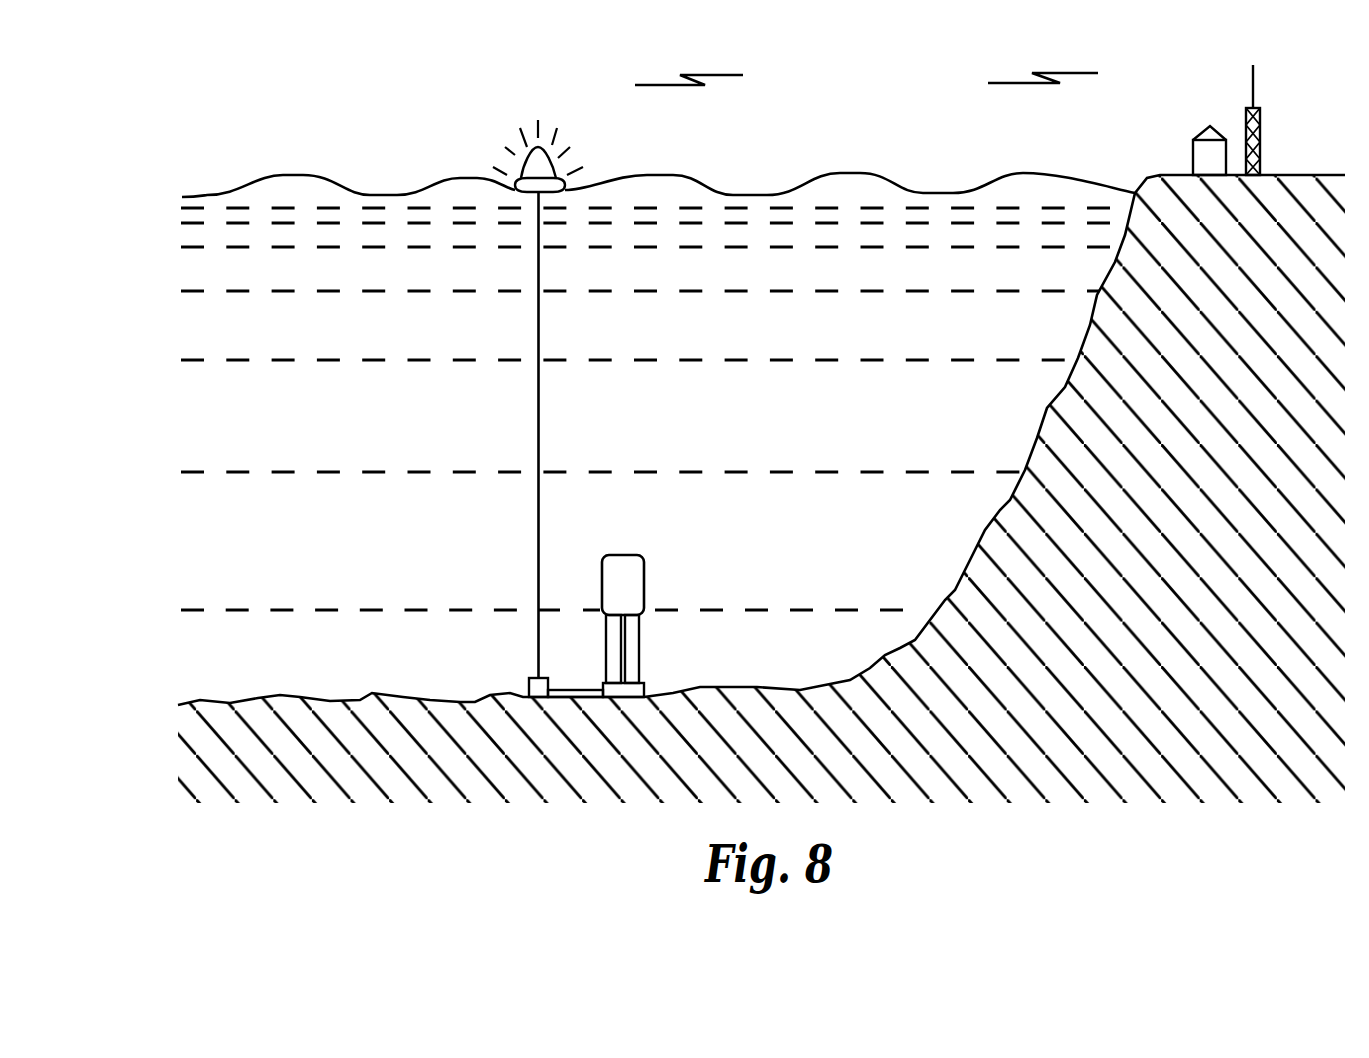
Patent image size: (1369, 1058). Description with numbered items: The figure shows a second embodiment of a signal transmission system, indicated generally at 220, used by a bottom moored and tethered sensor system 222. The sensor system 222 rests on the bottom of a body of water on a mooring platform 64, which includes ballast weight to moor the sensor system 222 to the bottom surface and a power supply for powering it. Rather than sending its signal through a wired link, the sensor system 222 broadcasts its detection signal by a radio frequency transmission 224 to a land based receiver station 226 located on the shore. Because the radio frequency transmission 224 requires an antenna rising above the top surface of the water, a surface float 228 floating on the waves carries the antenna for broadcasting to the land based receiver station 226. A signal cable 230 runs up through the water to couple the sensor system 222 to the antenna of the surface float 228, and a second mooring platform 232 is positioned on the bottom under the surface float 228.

The signal transmission system 220 is at (438, 101).
The surface float 228 is at (533, 143).
The radio frequency transmission 224 is at (717, 73).
The land based receiver station 226 is at (1252, 82).
The signal cable 230 is at (541, 328).
The bottom moored and tethered sensor system 222 is at (644, 569).
The second mooring platform 232 is at (529, 683).
The mooring platform 64 is at (643, 683).